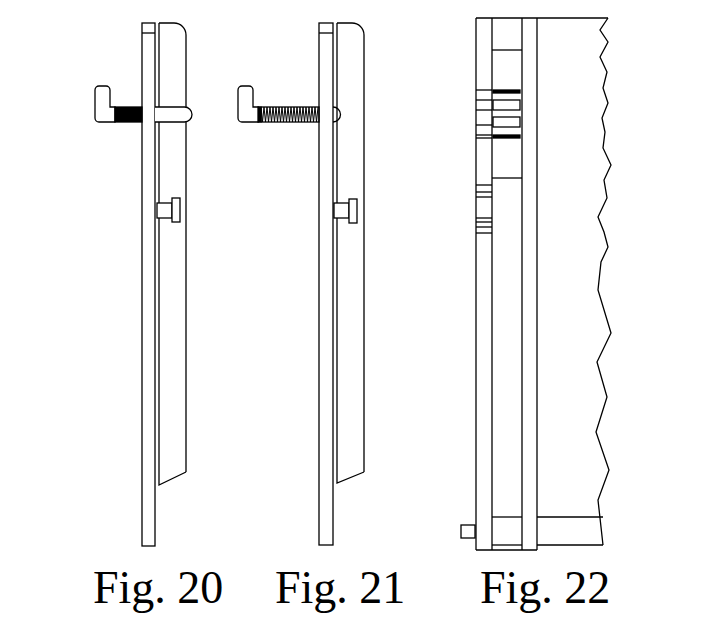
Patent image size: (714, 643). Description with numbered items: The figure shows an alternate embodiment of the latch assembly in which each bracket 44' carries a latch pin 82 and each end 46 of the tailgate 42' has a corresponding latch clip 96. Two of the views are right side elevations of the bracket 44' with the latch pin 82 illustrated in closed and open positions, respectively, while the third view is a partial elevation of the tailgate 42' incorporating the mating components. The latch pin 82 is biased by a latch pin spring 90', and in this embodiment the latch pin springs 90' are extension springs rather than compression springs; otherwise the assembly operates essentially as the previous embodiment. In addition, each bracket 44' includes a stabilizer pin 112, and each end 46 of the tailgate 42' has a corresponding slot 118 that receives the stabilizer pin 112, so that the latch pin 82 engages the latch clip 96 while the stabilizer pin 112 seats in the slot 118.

In FIG. 20, the latch pin 82 is at (98, 87).
In FIG. 21, the latch pin 82 is at (253, 88).
In FIG. 20, the latch pin spring 90' is at (115, 146).
In FIG. 21, the latch pin spring 90' is at (283, 145).
In FIG. 20, the stabilizer pin 112 is at (177, 223).
In FIG. 21, the stabilizer pin 112 is at (358, 207).
In FIG. 20, the bracket 44' is at (128, 284).
In FIG. 21, the bracket 44' is at (307, 284).
In FIG. 22, the latch clip 96 is at (476, 112).
In FIG. 22, the slot 118 is at (482, 209).
In FIG. 22, the end 46 is at (588, 120).
In FIG. 22, the tailgate 42' is at (564, 284).